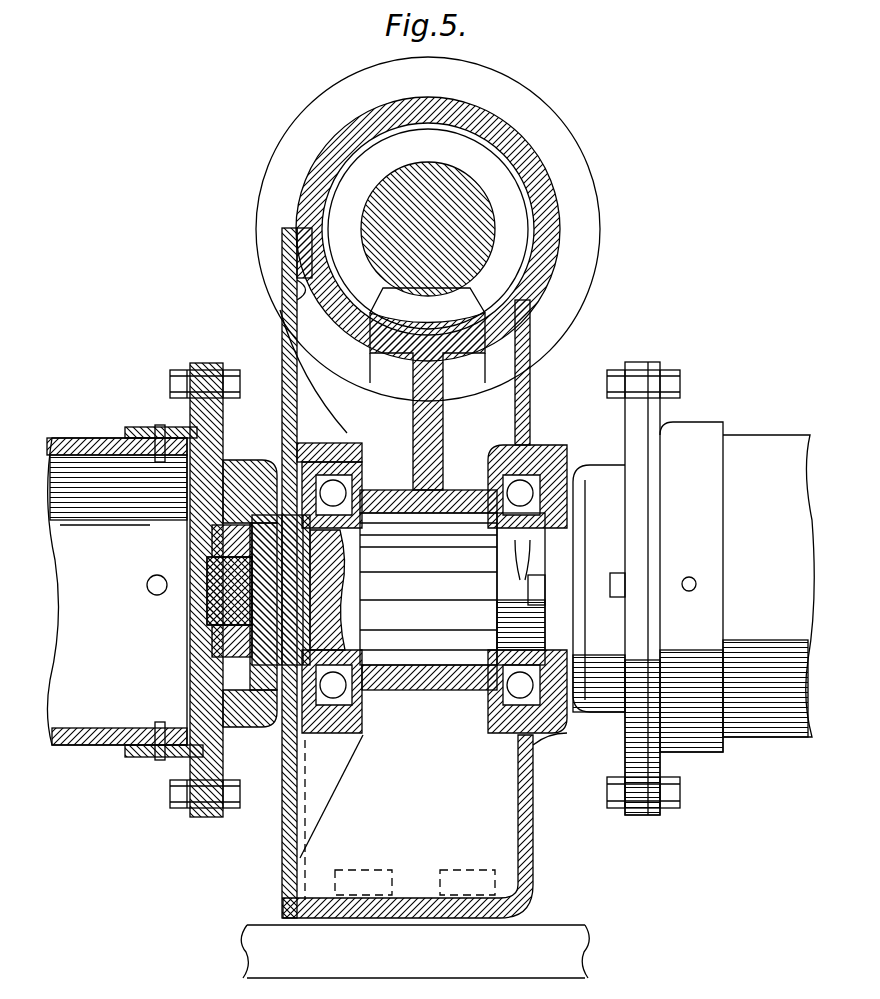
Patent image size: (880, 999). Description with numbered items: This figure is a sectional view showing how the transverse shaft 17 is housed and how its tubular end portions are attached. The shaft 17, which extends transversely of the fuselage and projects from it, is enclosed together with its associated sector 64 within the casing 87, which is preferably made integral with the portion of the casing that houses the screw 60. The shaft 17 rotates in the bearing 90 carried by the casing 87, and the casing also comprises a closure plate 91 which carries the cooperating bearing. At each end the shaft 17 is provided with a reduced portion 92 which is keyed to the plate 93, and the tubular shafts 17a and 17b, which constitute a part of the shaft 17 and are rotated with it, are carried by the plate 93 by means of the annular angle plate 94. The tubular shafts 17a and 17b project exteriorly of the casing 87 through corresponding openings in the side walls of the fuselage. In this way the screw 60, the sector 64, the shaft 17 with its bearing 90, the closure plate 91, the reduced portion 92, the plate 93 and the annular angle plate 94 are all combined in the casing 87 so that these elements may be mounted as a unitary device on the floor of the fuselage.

The screw 60 is at (515, 222).
The sector 64 is at (445, 410).
The bearing 90 is at (341, 490).
The shaft 17 is at (440, 650).
The tubular portion 17a is at (68, 425).
The tubular portion 17b is at (757, 438).
The annular angle plate 94 is at (176, 426).
The plate 93 is at (205, 466).
The reduced portion 92 is at (255, 575).
The closure plate 91 is at (290, 845).
The casing 87 is at (523, 800).